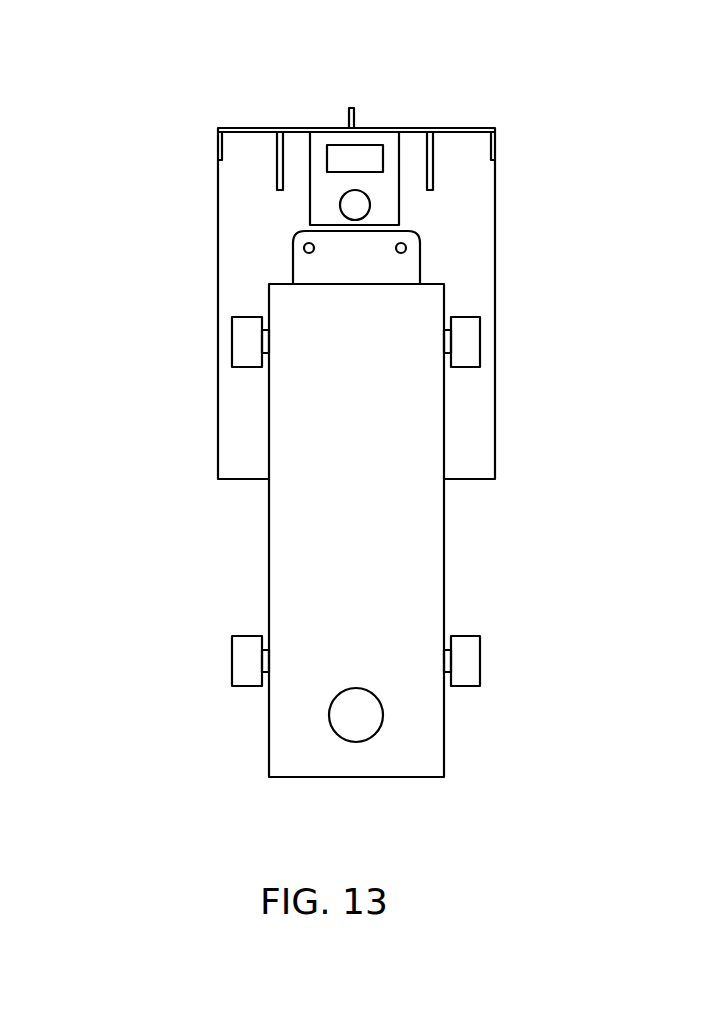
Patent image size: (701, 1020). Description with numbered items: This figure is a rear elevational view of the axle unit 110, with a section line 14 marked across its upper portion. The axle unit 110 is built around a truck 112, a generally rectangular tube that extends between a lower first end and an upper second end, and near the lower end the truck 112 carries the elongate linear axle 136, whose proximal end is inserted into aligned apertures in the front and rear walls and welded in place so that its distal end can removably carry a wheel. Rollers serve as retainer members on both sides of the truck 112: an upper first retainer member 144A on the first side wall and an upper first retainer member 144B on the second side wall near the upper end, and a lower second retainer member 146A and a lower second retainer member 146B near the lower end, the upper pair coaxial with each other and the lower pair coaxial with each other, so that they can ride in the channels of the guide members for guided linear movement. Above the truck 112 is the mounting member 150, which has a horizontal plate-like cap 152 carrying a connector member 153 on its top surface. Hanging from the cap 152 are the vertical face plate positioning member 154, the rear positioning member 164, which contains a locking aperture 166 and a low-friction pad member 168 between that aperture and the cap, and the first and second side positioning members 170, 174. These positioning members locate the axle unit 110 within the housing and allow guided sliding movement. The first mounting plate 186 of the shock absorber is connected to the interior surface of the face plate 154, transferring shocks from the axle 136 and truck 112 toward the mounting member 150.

The section line 14- 14 is at (243, 64).
The axle unit 110 is at (592, 245).
The truck 112 is at (445, 575).
The axle 136 is at (368, 718).
The upper first retainer member 144A is at (470, 352).
The upper first retainer member 144B is at (245, 345).
The lower second retainer member 146A is at (468, 673).
The lower second retainer member 146B is at (240, 652).
The mounting member 150 is at (497, 196).
The cap 152 is at (470, 130).
The connector member 153 is at (356, 112).
The face plate positioning member 154 is at (478, 435).
The rear positioning member 164 is at (311, 205).
The locking aperture 166 is at (372, 205).
The low-friction pad member 168 is at (342, 150).
The first side positioning member 170 is at (497, 150).
The second side positioning member 174 is at (218, 150).
The first mounting plate 186 is at (420, 248).